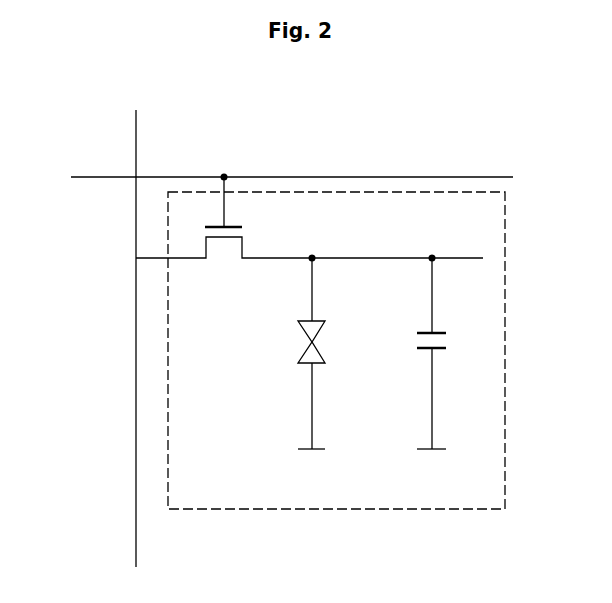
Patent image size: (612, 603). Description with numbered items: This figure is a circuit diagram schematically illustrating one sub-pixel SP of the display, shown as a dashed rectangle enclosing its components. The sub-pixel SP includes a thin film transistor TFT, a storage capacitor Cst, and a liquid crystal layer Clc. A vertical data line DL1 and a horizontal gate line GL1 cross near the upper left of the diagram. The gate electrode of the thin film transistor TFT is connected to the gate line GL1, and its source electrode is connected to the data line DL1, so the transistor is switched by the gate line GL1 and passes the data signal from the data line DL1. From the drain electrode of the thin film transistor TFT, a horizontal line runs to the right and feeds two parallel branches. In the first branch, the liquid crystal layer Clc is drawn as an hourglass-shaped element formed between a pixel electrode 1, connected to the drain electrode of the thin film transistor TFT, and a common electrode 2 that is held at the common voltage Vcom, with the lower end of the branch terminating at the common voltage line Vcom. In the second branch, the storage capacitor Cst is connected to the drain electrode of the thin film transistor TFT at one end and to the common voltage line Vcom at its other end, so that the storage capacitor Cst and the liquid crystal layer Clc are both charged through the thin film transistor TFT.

The pixel electrode 1 is at (305, 319).
The common electrode 2 is at (305, 365).
The data line DL1 is at (136, 325).
The gate line GL1 is at (275, 177).
The sub-pixel SP is at (505, 247).
The thin film transistor TFT is at (309, 234).
The liquid crystal layer Clc is at (305, 352).
The storage capacitor Cst is at (451, 352).
The common voltage line Vcom is at (311, 463).